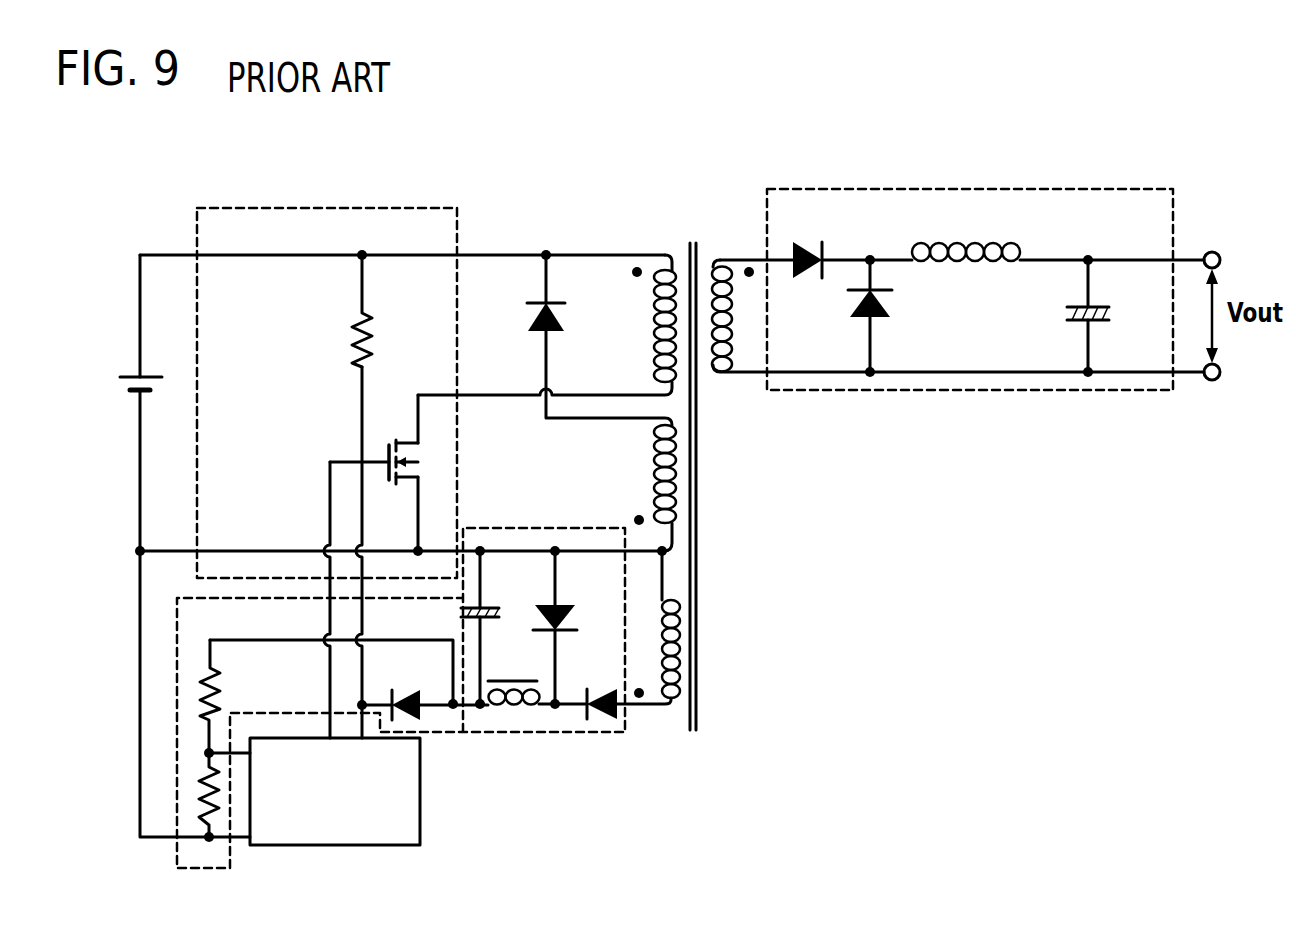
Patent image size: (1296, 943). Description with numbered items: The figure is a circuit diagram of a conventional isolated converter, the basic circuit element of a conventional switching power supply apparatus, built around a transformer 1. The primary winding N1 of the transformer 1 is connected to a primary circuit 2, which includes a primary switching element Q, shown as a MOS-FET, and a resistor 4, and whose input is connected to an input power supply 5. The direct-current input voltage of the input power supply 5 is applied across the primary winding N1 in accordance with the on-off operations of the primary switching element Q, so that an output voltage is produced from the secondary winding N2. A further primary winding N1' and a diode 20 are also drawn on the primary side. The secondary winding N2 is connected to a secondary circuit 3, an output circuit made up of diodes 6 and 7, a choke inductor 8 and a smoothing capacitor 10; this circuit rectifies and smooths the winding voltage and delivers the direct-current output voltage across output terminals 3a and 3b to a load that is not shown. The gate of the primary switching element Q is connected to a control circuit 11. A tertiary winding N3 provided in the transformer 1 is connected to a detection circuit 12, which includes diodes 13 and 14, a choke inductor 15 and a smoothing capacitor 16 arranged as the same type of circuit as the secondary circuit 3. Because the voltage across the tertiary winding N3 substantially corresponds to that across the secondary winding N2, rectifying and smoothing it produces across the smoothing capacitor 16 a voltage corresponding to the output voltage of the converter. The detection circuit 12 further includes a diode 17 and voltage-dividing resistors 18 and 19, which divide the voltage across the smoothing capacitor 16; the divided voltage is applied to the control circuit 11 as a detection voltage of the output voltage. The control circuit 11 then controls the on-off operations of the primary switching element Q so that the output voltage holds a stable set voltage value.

The transformer 1 is at (698, 243).
The primary circuit 2 is at (196, 220).
The secondary circuit 3 is at (968, 190).
The output terminal 3a is at (1215, 252).
The output terminal 3b is at (1212, 383).
The resistor 4 is at (360, 340).
The input power supply 5 is at (138, 390).
The diode 6 is at (810, 272).
The diode 7 is at (872, 286).
The choke inductor 8 is at (968, 275).
The smoothing capacitor 10 is at (1090, 305).
The control circuit 11 is at (420, 828).
The detection circuit 12 is at (625, 732).
The diode 13 is at (558, 603).
The diode 14 is at (605, 725).
The choke inductor 15 is at (505, 712).
The smoothing capacitor 16 is at (487, 607).
The diode 17 is at (420, 718).
The voltage-dividing resistor 18 is at (208, 712).
The voltage-dividing resistor 19 is at (208, 800).
The diode 20 is at (540, 303).
The primary switching element Q is at (400, 440).
The primary winding N1 is at (715, 364).
The primary winding N1' is at (670, 440).
The secondary winding N2 is at (740, 376).
The tertiary winding N3 is at (680, 645).